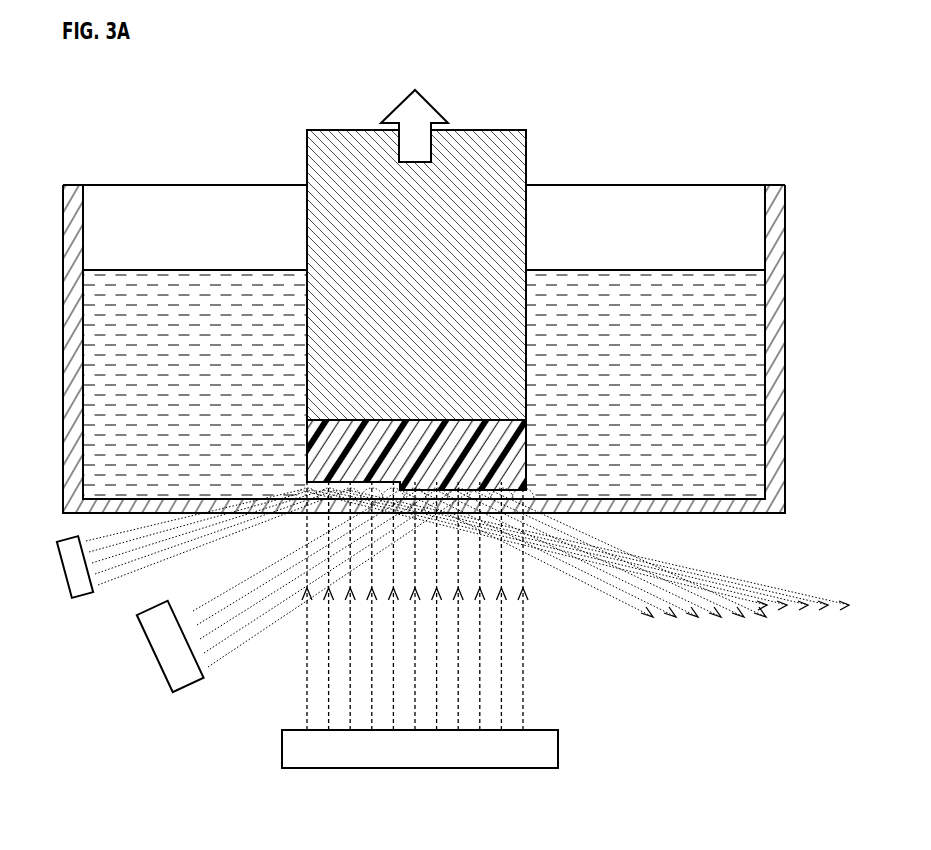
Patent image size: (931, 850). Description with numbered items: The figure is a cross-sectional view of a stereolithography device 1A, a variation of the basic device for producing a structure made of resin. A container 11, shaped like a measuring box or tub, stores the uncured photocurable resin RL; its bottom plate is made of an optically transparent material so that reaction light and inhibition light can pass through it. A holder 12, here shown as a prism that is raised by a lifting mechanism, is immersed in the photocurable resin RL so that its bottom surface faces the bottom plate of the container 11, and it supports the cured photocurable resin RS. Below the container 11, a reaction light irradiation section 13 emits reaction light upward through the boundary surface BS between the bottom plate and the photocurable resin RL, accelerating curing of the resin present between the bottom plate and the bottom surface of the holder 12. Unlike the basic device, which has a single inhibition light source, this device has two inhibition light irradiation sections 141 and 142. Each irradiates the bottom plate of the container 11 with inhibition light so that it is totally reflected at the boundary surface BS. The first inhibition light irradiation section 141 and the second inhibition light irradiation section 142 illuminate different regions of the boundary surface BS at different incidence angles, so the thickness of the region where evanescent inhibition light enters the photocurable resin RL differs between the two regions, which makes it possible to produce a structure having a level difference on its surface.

The stereolithography device 1A is at (804, 113).
The container 11 is at (76, 183).
The holder 12 is at (305, 157).
The reaction light irradiation section 13 is at (419, 770).
The first inhibition light irradiation section 141 is at (152, 660).
The second inhibition light irradiation section 142 is at (61, 576).
The photocurable resin RL is at (179, 268).
The photocurable resin RS is at (528, 452).
The boundary surface BS is at (745, 499).